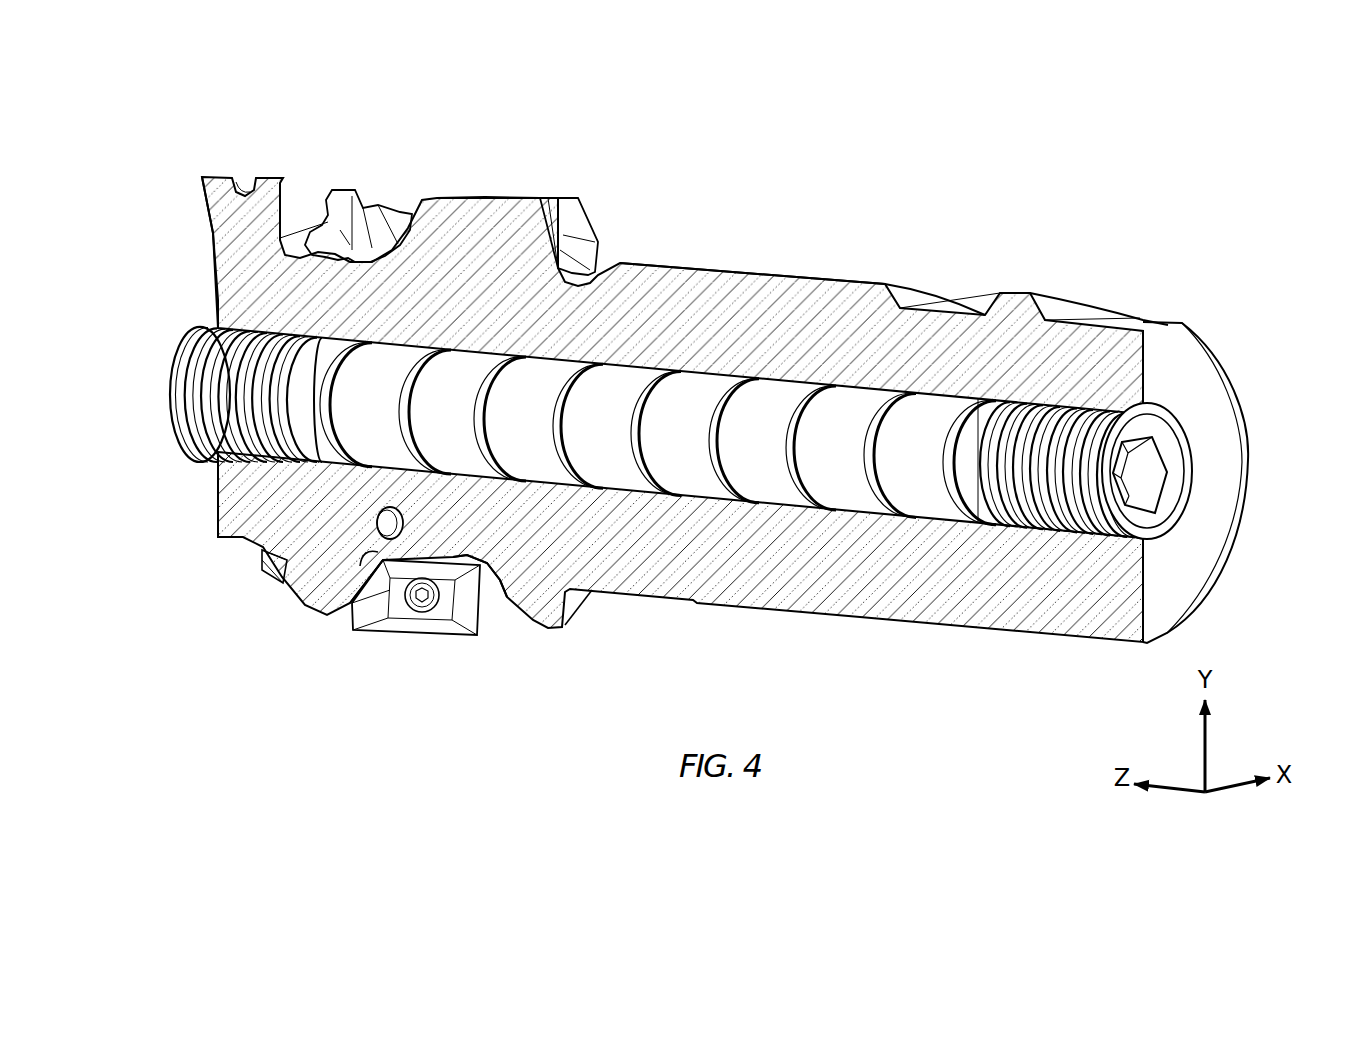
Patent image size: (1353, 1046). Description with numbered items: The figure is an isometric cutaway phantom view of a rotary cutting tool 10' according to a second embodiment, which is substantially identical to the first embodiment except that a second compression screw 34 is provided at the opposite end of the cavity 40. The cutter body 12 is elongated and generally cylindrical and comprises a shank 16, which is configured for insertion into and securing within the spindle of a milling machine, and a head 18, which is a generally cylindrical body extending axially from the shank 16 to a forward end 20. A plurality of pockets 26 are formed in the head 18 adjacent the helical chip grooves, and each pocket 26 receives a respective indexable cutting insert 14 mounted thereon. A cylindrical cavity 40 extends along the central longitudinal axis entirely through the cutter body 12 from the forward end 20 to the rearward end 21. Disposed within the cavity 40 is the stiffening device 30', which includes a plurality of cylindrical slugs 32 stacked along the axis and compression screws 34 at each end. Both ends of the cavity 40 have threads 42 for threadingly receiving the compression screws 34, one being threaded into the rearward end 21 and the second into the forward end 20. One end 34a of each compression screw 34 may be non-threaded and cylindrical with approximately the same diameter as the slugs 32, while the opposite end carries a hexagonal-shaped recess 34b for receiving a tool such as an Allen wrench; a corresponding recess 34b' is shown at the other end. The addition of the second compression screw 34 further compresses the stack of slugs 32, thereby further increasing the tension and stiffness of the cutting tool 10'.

The cutting tool 10' is at (1123, 162).
The cutter body 12 is at (820, 240).
The cutting insert 14 is at (588, 220).
The shank 16 is at (842, 275).
The head 18 is at (440, 178).
The forward end 20 is at (200, 278).
The rearward end 21 is at (1218, 418).
The pocket 26 is at (495, 605).
The stiffening device 30' is at (658, 376).
The cylindrical slug 32 is at (622, 397).
The compression screw 34 is at (205, 330).
The end of compression screw 34a is at (987, 425).
The hexagonal-shaped recess 34b is at (1202, 471).
The insert in top pocket 34b' is at (351, 252).
The cavity 40 is at (869, 412).
The threads 42 is at (245, 328).